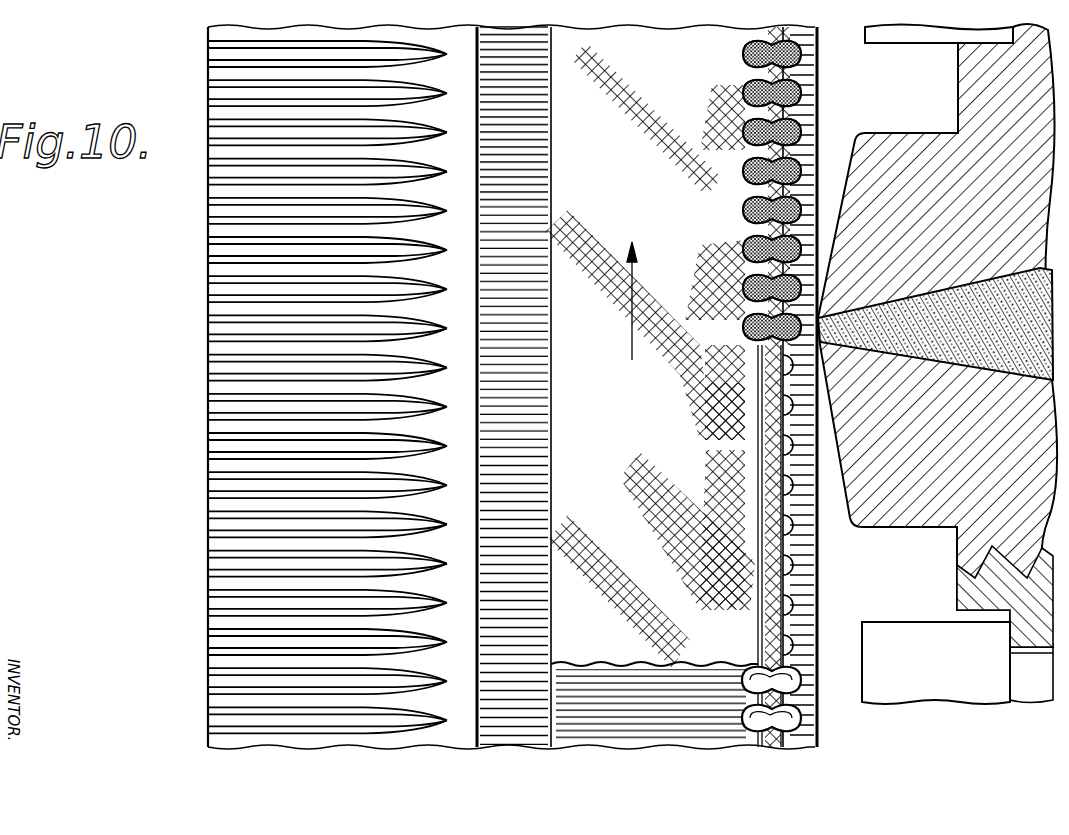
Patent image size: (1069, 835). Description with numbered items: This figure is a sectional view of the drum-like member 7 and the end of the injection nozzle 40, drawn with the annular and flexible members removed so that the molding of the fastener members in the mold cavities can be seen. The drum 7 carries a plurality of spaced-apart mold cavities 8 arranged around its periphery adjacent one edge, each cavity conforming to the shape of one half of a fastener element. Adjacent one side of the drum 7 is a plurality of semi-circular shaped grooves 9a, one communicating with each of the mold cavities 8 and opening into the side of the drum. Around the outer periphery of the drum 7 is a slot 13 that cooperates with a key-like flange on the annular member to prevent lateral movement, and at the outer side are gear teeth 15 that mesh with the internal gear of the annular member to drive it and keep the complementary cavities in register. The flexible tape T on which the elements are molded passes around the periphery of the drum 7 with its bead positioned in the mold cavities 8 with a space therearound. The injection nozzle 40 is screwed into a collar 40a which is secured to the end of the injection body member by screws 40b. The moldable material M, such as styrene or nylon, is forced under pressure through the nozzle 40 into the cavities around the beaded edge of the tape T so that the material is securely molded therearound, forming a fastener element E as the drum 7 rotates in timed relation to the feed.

The drum-like member 7 is at (607, 758).
The mold cavities 8 is at (757, 685).
The semi-circular shaped grooves 9a is at (818, 683).
The slot 13 is at (522, 718).
The gear teeth 15 is at (217, 408).
The injection nozzle 40 is at (912, 492).
The collar 40a is at (1033, 625).
The screws 40b is at (950, 685).
The fastener element E is at (752, 262).
The moldable material M is at (918, 300).
The flexible tape T is at (570, 383).